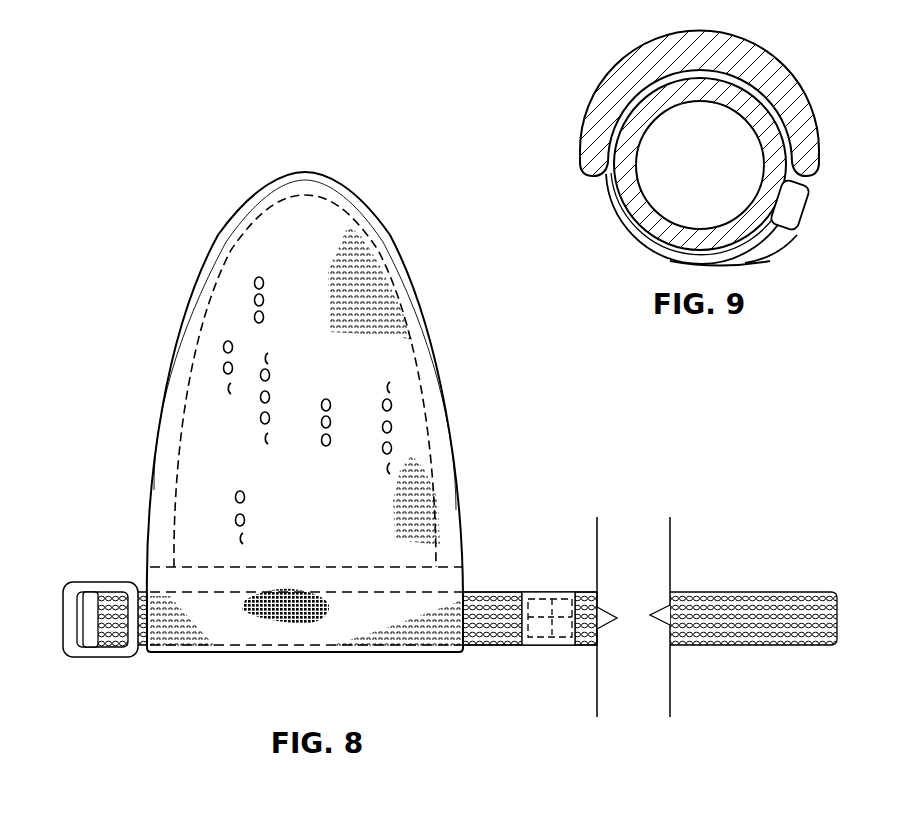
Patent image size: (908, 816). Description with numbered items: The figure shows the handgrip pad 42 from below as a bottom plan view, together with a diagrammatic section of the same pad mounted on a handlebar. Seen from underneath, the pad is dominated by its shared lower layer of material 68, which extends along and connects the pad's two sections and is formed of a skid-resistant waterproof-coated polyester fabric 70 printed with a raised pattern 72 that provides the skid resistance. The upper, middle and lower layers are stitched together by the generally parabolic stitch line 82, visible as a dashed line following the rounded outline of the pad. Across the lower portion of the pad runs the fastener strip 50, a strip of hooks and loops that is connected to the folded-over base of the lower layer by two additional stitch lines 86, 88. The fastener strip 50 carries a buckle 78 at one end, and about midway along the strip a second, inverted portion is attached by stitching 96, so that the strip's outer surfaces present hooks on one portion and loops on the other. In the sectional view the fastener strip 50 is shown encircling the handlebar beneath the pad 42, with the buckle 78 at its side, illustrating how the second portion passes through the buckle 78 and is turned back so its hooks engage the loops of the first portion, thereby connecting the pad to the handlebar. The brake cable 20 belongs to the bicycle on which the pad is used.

In FIG. 9, the brake cable 20 is at (632, 190).
In FIG. 8, the handgrip pad 42 is at (403, 178).
In FIG. 9, the handgrip pad 42 is at (748, 70).
In FIG. 8, the fastener strip 50 is at (122, 630).
In FIG. 9, the fastener strip 50 is at (648, 240).
In FIG. 8, the lower layer of material 68 is at (397, 368).
In FIG. 8, the waterproof-coated polyester fabric 70 is at (393, 348).
In FIG. 8, the raised pattern 72 is at (392, 397).
In FIG. 8, the buckle 78 is at (95, 585).
In FIG. 9, the buckle 78 is at (797, 205).
In FIG. 8, the parabolic stitch line 82 is at (222, 268).
In FIG. 8, the stitch line 86 is at (195, 593).
In FIG. 8, the stitch line 88 is at (237, 645).
In FIG. 8, the stitching 96 is at (515, 600).